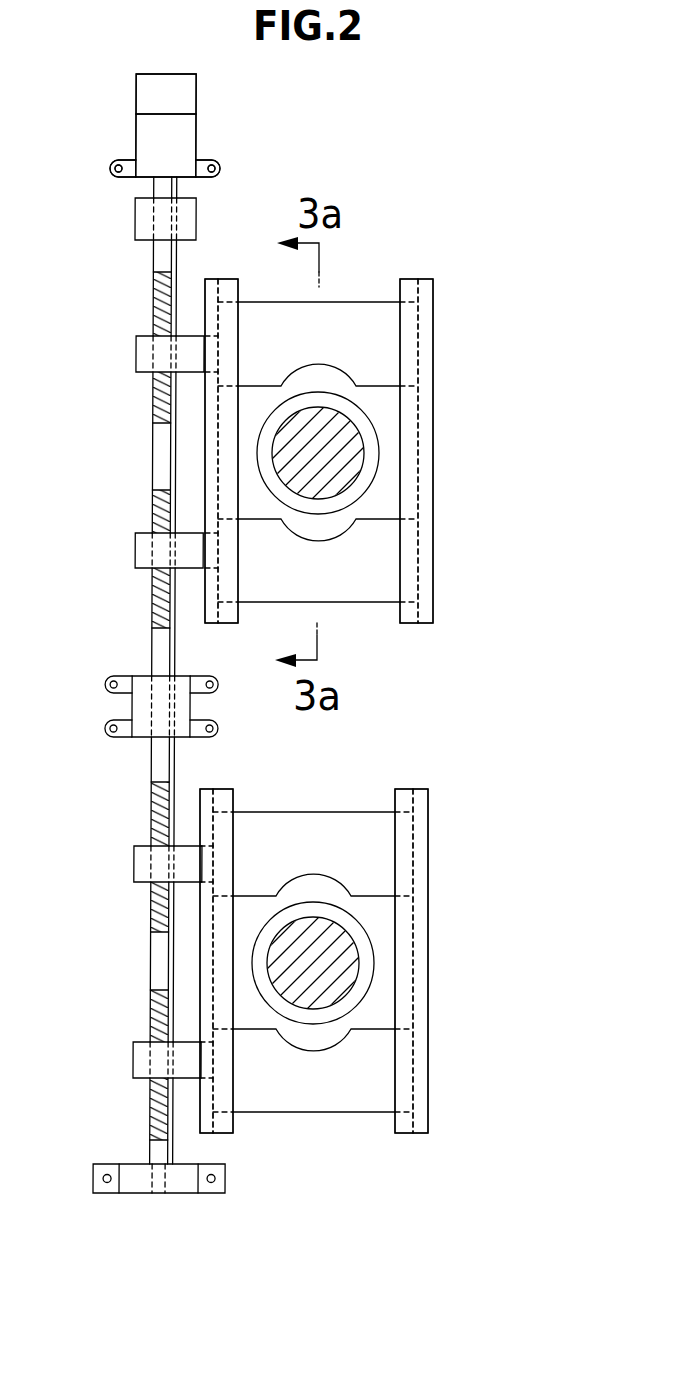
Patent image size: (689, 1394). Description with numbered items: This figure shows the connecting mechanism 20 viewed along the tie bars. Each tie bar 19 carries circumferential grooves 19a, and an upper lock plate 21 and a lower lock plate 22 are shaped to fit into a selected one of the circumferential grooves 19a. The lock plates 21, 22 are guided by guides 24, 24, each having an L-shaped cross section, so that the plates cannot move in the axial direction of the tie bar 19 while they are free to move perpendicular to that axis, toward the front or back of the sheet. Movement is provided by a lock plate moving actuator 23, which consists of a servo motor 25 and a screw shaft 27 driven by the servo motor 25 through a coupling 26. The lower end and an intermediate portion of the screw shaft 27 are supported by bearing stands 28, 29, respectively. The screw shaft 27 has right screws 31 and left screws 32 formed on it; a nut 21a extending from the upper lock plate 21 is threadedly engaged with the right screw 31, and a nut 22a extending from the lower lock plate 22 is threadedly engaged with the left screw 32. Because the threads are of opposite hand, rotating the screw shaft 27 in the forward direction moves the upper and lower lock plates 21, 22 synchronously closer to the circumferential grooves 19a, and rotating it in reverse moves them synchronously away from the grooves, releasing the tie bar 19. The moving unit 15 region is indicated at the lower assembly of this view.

The moving unit 15 is at (417, 714).
The tie bar 19 is at (348, 452).
The circumferential groove 19a is at (352, 422).
The connecting mechanism 20 is at (517, 200).
The upper lock plate 21 is at (349, 312).
The nut 21a is at (139, 356).
The lower lock plate 22 is at (368, 578).
The nut 22a is at (139, 552).
The lock plate moving actuator 23 is at (104, 102).
The guide 24 is at (229, 287).
The servo motor 25 is at (182, 139).
The coupling 26 is at (145, 219).
The screw shaft 27 is at (157, 456).
The bearing stand 28 is at (141, 1180).
The bearing stand 29 is at (142, 706).
The right screw 31 is at (155, 301).
The left screw 32 is at (160, 600).